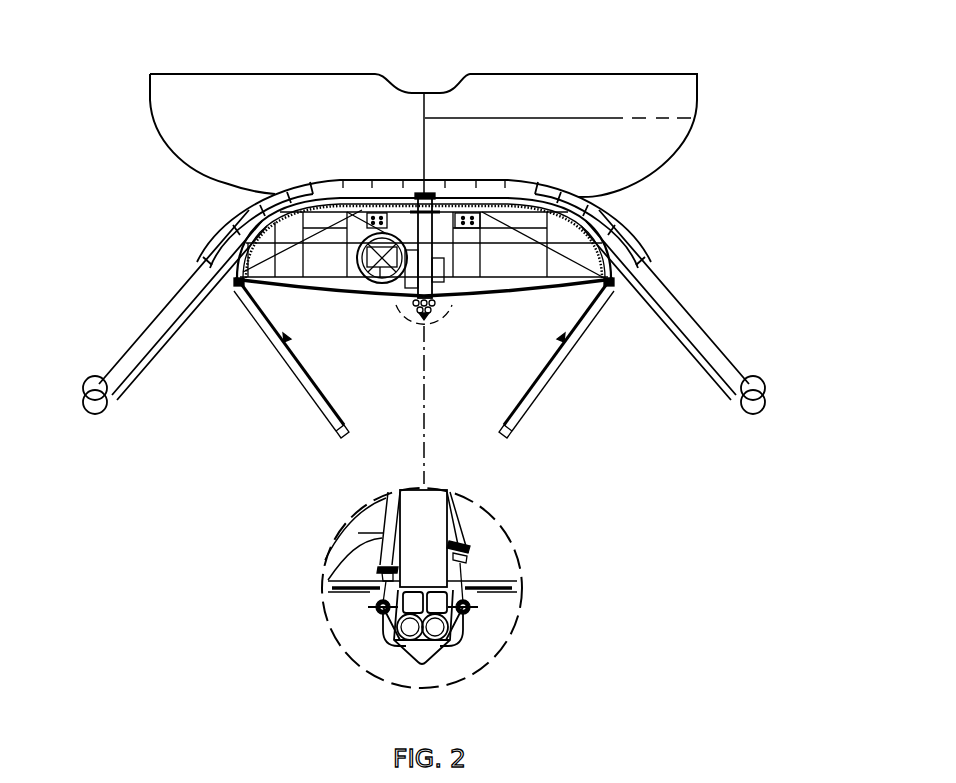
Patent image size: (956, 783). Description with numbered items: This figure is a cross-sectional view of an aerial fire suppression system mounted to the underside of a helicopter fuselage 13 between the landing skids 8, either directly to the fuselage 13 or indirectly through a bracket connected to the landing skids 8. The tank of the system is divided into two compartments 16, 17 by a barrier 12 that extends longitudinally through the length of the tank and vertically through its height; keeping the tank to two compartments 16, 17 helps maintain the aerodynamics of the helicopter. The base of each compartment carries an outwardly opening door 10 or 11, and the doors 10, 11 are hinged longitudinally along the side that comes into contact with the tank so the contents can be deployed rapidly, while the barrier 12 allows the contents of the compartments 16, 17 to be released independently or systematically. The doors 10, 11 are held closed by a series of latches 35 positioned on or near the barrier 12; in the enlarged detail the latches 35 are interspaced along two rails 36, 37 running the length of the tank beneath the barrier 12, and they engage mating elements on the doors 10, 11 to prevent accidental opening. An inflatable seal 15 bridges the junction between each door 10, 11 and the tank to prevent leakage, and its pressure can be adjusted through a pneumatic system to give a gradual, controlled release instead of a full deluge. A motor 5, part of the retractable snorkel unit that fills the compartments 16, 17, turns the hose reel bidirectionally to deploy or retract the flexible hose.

The helicopter fuselage 13 is at (705, 80).
The landing skids 8 is at (85, 377).
The compartment 16 is at (306, 290).
The compartment 17 is at (542, 290).
The motor 5 is at (380, 283).
The barrier 12 is at (437, 300).
The outwardly opening door 10 is at (297, 380).
The outwardly opening door 11 is at (557, 378).
The inflatable seal 15 is at (355, 598).
The latches 35 is at (376, 632).
The rail 36 is at (396, 643).
The rail 37 is at (448, 643).